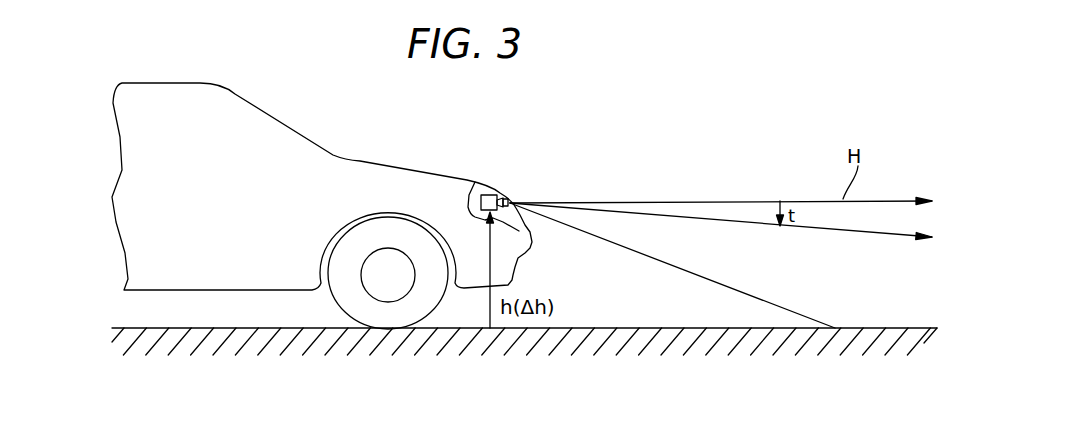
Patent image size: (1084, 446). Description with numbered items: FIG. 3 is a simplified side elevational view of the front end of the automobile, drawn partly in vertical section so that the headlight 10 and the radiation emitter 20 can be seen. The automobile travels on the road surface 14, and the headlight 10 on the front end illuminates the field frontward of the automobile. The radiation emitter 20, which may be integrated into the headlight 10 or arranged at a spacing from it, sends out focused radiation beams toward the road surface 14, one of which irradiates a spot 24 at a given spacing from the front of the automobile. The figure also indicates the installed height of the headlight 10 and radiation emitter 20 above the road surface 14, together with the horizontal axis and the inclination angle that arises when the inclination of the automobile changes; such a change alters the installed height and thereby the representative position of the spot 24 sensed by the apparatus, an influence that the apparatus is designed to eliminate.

The headlight 10 is at (495, 187).
The radiation emitter 20 is at (491, 190).
The road surface 14 is at (622, 332).
The spot 24 is at (837, 330).